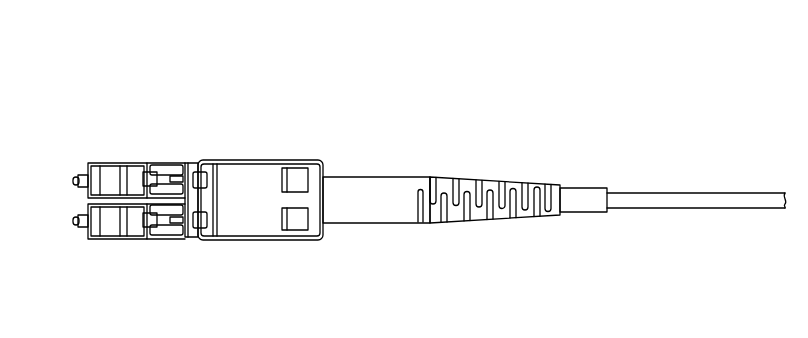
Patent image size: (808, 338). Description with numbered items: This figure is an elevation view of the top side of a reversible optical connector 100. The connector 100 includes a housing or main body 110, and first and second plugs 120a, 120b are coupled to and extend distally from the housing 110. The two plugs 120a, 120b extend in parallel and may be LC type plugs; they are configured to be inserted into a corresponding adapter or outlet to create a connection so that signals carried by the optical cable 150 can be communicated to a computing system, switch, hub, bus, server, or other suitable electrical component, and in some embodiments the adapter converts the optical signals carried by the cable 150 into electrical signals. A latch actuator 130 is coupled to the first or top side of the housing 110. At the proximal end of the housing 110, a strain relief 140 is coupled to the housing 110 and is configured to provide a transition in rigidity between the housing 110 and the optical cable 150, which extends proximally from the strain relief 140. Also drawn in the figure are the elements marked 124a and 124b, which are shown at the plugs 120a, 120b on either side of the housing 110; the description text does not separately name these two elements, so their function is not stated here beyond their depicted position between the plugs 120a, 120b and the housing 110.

The optical connector 100 is at (557, 85).
The housing 110 is at (240, 150).
The first plug 120a is at (102, 160).
The second plug 120b is at (98, 240).
The first latch 124a is at (123, 177).
The second latch 124b is at (123, 218).
The latch actuator 130 is at (260, 220).
The strain relief 140 is at (405, 176).
The optical cable 150 is at (653, 192).